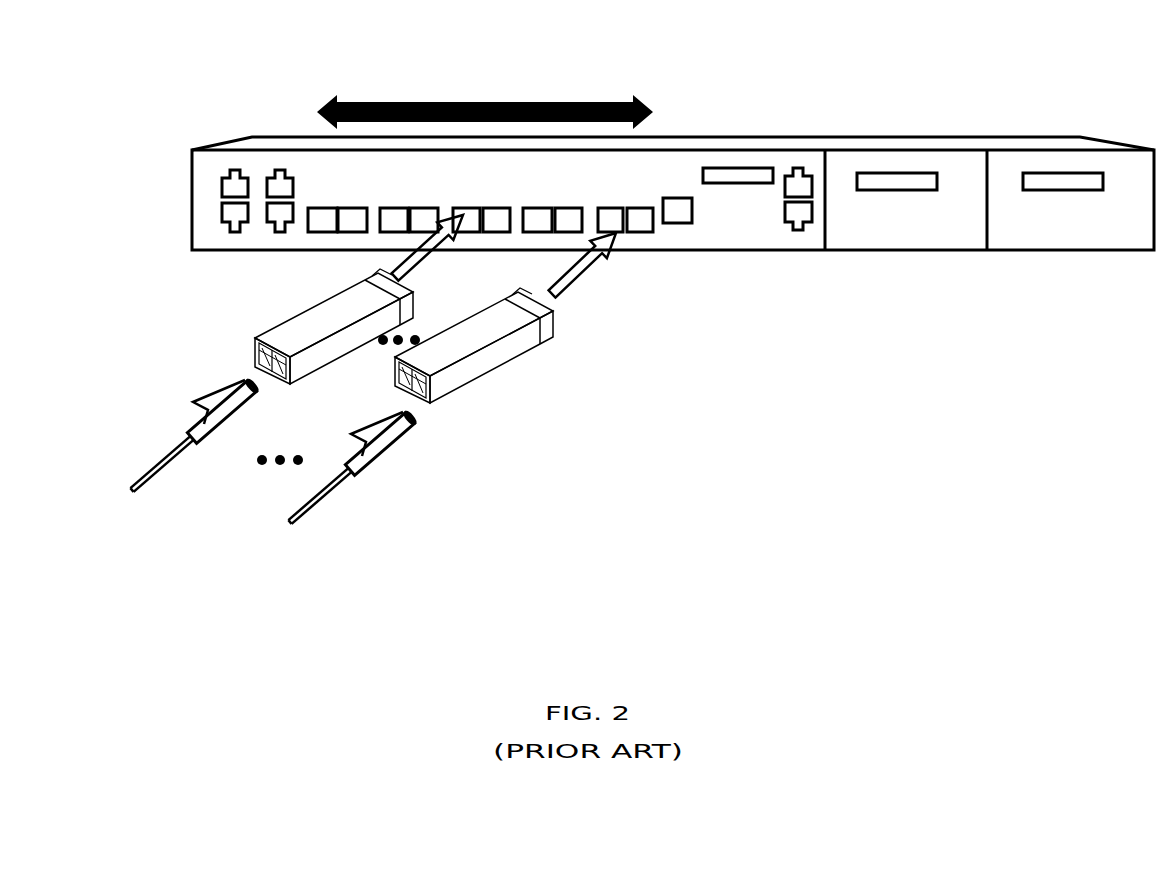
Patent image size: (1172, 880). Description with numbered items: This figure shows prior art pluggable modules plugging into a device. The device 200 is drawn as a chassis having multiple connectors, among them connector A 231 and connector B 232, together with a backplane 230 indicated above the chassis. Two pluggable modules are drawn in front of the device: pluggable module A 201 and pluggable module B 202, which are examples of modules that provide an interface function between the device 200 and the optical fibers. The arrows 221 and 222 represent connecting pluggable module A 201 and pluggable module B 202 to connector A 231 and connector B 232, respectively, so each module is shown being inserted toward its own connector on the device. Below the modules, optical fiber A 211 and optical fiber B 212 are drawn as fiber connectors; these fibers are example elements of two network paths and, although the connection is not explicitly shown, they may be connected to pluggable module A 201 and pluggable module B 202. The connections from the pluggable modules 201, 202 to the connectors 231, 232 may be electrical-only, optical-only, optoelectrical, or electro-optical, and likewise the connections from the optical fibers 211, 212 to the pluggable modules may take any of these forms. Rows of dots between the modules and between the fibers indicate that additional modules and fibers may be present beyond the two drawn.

The device 200 is at (812, 122).
The pluggable module A 201 is at (302, 312).
The pluggable module B 202 is at (540, 342).
The optical fiber A 211 is at (182, 433).
The optical fiber B 212 is at (368, 480).
The arrow 221 is at (440, 255).
The arrow 222 is at (600, 263).
The backplane 230 is at (545, 92).
The connector A 231 is at (475, 195).
The connector B 232 is at (650, 242).